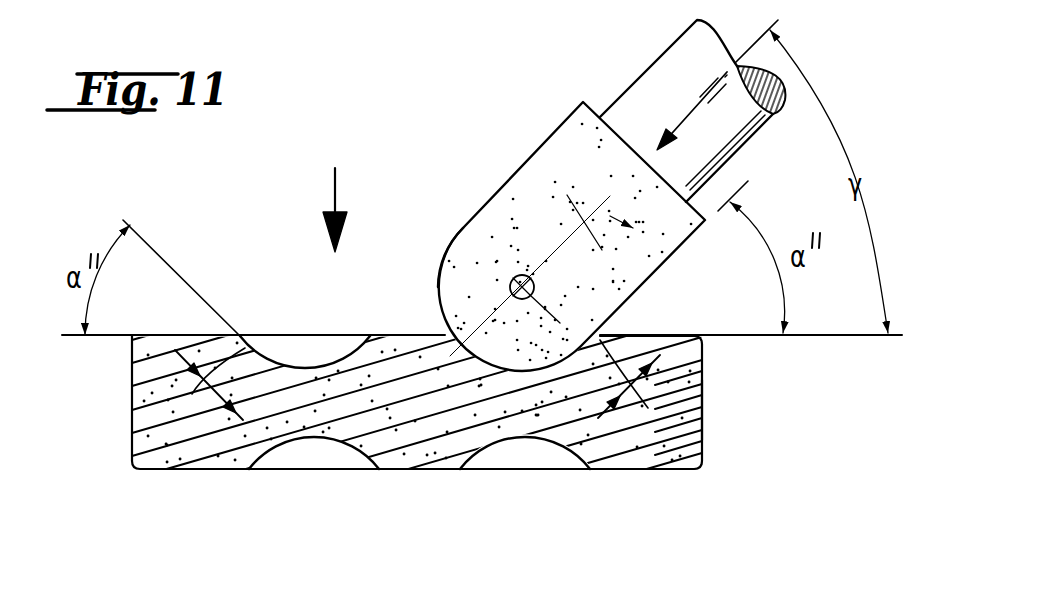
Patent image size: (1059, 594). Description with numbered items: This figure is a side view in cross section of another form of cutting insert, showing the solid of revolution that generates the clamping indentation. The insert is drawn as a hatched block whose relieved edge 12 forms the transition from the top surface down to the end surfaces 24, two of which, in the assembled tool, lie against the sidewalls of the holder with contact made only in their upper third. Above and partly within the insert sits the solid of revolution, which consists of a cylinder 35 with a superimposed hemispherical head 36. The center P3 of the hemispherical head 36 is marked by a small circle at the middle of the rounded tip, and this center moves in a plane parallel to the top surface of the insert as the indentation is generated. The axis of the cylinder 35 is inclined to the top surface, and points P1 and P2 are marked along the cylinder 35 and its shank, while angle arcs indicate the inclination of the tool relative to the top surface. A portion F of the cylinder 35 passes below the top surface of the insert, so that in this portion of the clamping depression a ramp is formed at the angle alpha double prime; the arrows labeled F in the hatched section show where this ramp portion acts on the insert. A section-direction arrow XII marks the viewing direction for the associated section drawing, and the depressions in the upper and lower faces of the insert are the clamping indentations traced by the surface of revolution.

The portion of the cylinder F is at (577, 498).
The relieved edge 12 is at (700, 331).
The end surface 24 is at (706, 412).
The cylinder 35 is at (498, 205).
The hemispherical head 36 is at (438, 306).
The tool point P1 is at (590, 206).
The tool point P2 is at (693, 112).
The center of the hemispherical head P3 is at (513, 279).
The section view direction XII is at (354, 210).